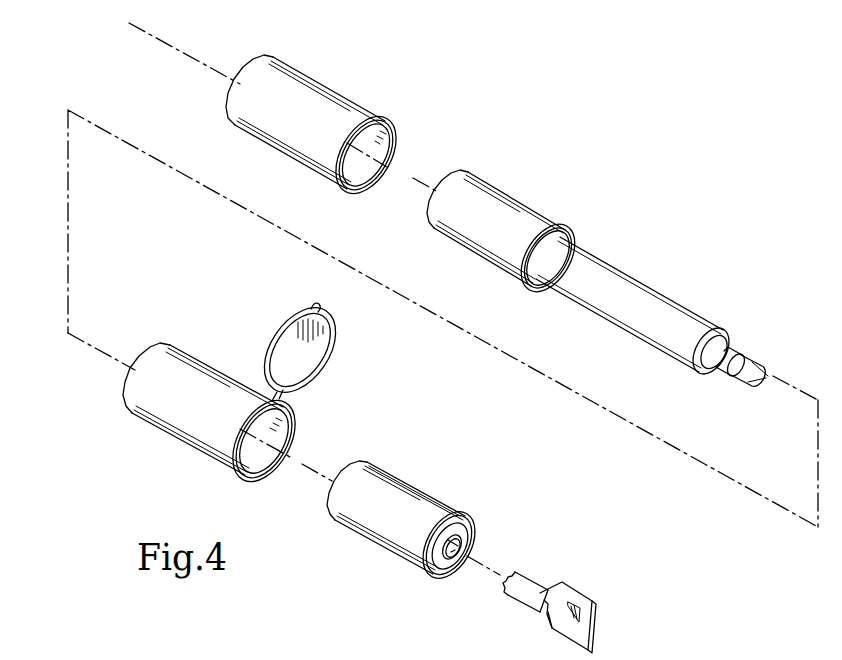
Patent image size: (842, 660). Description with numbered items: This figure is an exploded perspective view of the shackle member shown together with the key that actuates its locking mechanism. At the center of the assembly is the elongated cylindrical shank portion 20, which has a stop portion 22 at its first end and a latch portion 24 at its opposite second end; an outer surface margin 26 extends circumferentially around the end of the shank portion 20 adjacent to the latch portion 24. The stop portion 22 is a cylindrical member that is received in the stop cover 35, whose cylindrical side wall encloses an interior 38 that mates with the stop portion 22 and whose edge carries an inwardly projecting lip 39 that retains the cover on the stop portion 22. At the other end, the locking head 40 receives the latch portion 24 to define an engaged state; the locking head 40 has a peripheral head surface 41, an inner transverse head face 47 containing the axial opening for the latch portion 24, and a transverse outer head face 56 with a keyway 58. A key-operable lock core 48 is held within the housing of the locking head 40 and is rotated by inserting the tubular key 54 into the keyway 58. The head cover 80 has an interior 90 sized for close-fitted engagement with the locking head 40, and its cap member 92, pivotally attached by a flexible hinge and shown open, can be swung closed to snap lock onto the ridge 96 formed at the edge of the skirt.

The shank portion 20 is at (621, 308).
The stop portion 22 is at (506, 210).
The latch portion 24 is at (748, 347).
The outer surface margin 26 is at (693, 368).
The stop cover 35 is at (365, 142).
The interior 38 is at (364, 178).
The lip 39 is at (398, 143).
The locking head 40 is at (423, 529).
The peripheral head surface 41 is at (377, 540).
The inner transverse head face 47 is at (356, 462).
The lock core 48 is at (449, 573).
The tubular key 54 is at (582, 570).
The transverse outer head face 56 is at (476, 538).
The keyway 58 is at (466, 520).
The head cover 80 is at (253, 394).
The interior 90 is at (266, 466).
The cap member 92 is at (298, 318).
The ridge 96 is at (293, 421).